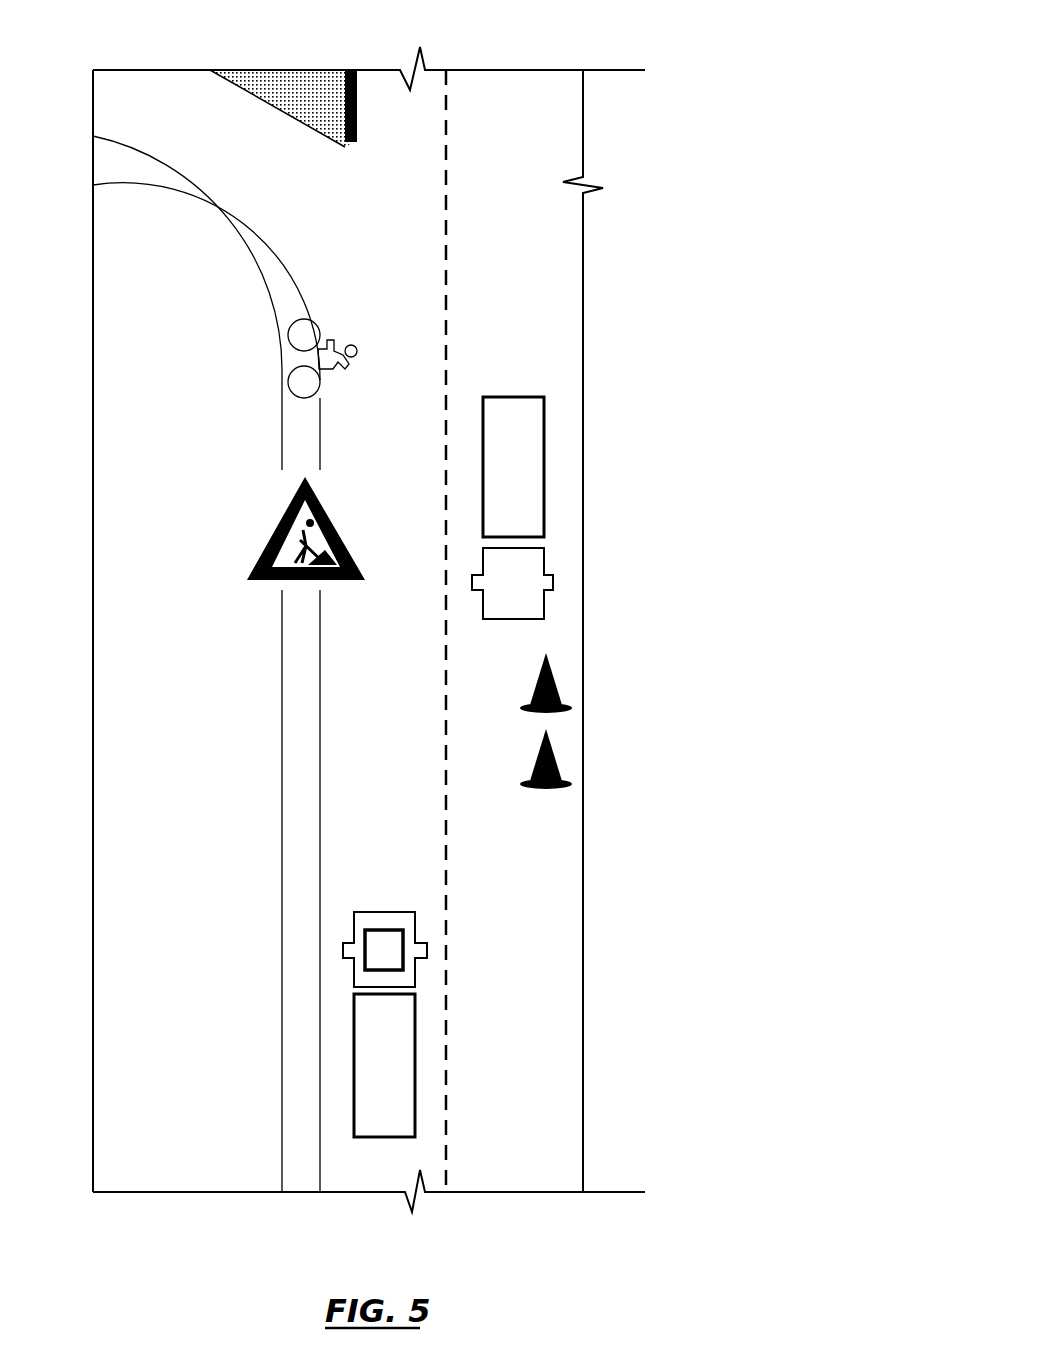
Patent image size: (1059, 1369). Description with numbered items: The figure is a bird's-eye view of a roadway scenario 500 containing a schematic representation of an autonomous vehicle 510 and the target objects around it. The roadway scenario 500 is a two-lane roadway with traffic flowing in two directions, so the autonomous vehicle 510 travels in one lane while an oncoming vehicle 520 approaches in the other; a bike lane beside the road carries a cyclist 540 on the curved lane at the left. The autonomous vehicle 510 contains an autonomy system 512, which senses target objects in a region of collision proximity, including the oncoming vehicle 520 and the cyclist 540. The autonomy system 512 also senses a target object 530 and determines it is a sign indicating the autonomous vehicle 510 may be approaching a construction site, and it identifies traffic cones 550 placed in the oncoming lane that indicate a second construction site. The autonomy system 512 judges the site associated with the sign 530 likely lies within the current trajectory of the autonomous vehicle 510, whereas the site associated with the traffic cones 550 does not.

The roadway scenario 500 is at (693, 78).
The autonomous vehicle 510 is at (446, 1024).
The autonomy system 512 is at (402, 968).
The oncoming vehicle 520 is at (545, 498).
The target object (sign) 530 is at (279, 528).
The cyclist 540 is at (288, 367).
The traffic cones 550 is at (573, 712).